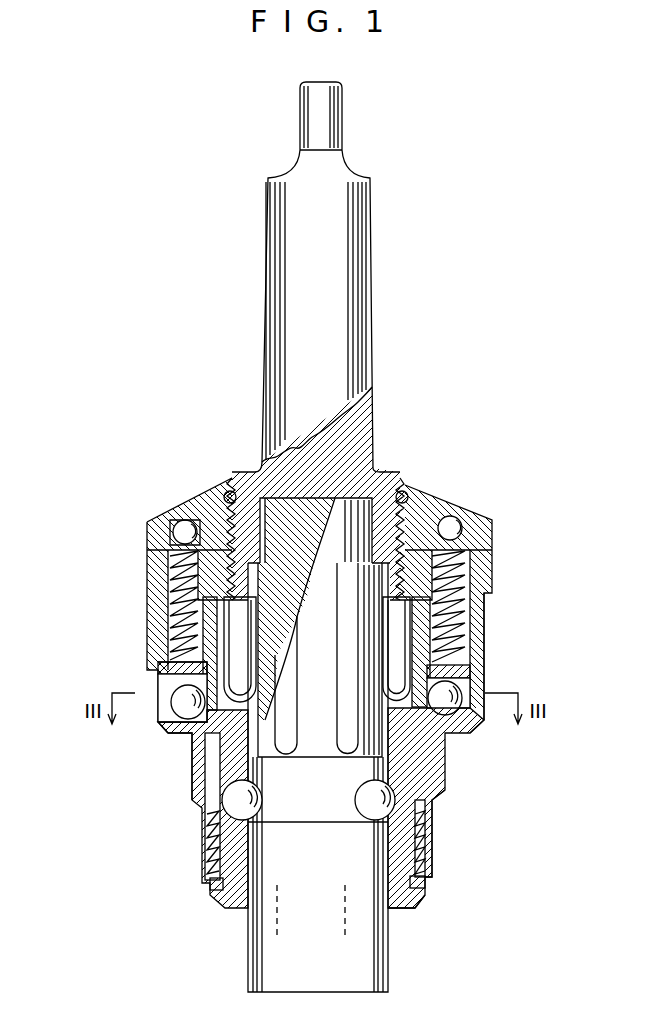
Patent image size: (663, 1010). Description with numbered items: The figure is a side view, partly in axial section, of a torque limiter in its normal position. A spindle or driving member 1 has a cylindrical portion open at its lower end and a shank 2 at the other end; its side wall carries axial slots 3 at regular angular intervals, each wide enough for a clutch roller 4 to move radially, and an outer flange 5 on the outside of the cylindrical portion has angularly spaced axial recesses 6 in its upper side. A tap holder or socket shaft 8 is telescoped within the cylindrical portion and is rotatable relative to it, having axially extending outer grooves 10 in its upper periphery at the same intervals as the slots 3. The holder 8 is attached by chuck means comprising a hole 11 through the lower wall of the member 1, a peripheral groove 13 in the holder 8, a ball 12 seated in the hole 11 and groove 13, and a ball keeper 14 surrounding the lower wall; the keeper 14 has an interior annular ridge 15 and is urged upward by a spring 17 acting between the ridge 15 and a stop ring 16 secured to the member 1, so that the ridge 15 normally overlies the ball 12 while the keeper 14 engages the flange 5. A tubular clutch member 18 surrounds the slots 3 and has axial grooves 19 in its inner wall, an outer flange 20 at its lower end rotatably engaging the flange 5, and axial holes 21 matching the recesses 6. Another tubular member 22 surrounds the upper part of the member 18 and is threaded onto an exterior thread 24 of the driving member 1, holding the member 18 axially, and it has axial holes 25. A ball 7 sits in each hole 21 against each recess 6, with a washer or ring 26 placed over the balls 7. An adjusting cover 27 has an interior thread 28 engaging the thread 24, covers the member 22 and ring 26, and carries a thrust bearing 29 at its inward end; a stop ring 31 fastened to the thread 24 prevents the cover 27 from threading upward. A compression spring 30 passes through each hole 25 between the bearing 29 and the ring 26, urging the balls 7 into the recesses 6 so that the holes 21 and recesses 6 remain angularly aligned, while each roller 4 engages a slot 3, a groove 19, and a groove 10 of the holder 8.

The spindle or driving member 1 is at (380, 472).
The shank 2 is at (373, 303).
The axial slots 3 is at (437, 760).
The clutch roller 4 is at (388, 638).
The outer flange 5 is at (473, 727).
The axial recesses 6 is at (183, 737).
The ball 7 is at (177, 708).
The tap holder or socket shaft 8 is at (302, 905).
The outer grooves 10 is at (343, 590).
The hole 11 is at (230, 790).
The ball 12 is at (222, 822).
The peripheral groove 13 is at (432, 817).
The ball keeper 14 is at (430, 840).
The interior annular ridge 15 is at (420, 800).
The stop ring 16 is at (418, 886).
The spring 17 is at (430, 858).
The tubular or annular clutch member 18 is at (425, 660).
The axial grooves 19 is at (425, 613).
The outer flange 20 is at (172, 703).
The axial holes 21 is at (158, 693).
The tubular member 22 is at (210, 582).
The exterior thread 24 is at (176, 524).
The axial holes 25 is at (172, 632).
The washer or ring 26 is at (162, 670).
The adjusting cover 27 is at (460, 516).
The interior thread 28 is at (176, 524).
The thrust bearing 29 is at (150, 527).
The compression spring 30 is at (160, 605).
The stop ring 31 is at (228, 493).